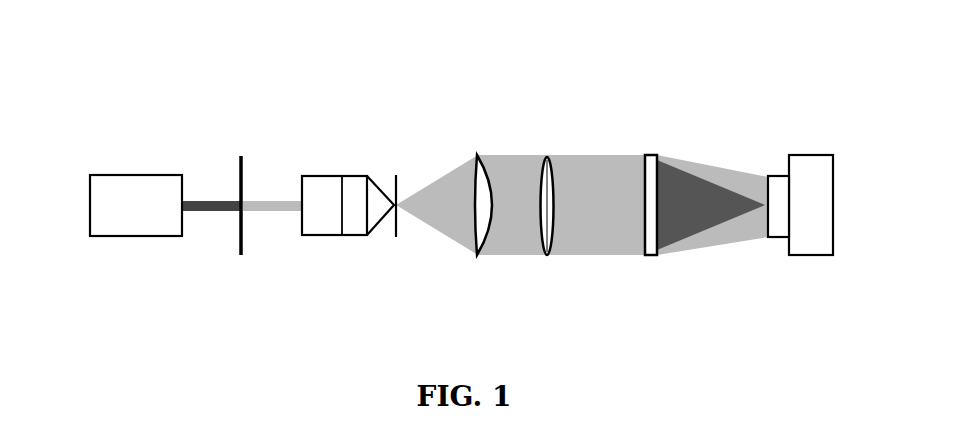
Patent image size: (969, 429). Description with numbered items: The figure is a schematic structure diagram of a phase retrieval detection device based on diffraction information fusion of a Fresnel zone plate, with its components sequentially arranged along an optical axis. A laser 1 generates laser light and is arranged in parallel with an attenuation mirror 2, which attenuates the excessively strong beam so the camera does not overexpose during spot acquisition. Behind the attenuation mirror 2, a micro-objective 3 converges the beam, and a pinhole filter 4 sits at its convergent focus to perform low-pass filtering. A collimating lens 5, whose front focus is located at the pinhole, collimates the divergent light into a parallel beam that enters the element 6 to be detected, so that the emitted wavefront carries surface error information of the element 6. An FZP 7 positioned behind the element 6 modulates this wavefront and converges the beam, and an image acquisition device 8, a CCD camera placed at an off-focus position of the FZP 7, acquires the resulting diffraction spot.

The laser 1 is at (138, 170).
The attenuation mirror 2 is at (243, 147).
The micro-objective 3 is at (348, 247).
The pinhole filter 4 is at (397, 170).
The collimating lens 5 is at (480, 152).
The element to be detected 6 is at (545, 262).
The FZP 7 is at (650, 260).
The image acquisition device 8 is at (797, 147).